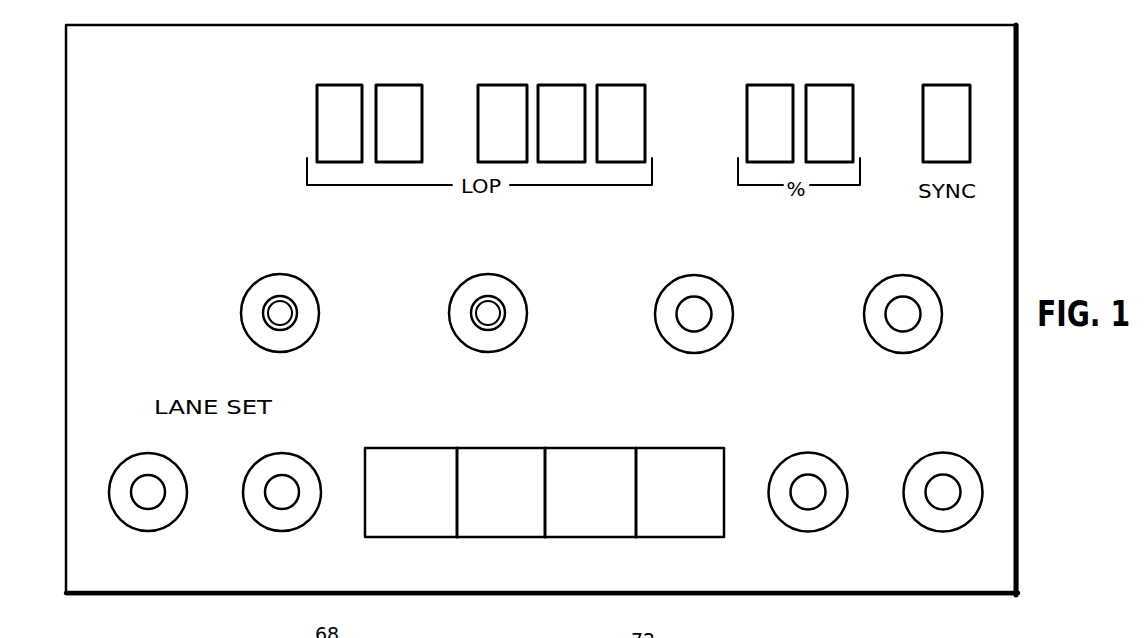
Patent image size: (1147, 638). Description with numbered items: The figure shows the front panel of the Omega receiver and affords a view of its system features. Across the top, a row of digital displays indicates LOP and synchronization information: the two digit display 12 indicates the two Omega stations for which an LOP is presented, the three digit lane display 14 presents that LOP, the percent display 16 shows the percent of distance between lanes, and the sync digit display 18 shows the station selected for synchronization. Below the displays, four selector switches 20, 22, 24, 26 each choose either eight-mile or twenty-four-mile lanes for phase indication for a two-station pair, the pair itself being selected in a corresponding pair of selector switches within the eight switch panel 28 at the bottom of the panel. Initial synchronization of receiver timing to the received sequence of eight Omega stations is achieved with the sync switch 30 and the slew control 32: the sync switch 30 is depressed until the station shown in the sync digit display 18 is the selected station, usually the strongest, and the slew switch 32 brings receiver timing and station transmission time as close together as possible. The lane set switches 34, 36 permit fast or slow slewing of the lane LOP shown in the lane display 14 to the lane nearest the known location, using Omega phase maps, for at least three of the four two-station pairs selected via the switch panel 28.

The two digit display 12 is at (363, 72).
The three digit lane display 14 is at (568, 72).
The percent display 16 is at (795, 70).
The sync digit display 18 is at (948, 72).
The lane selector switch 20 is at (276, 276).
The lane selector switch 22 is at (490, 275).
The lane selector switch 24 is at (698, 273).
The lane selector switch 26 is at (906, 275).
The eight switch panel 28 is at (526, 438).
The sync switch 30 is at (806, 531).
The slew control 32 is at (940, 531).
The lane set switch 34 is at (110, 485).
The lane set switch 36 is at (307, 460).